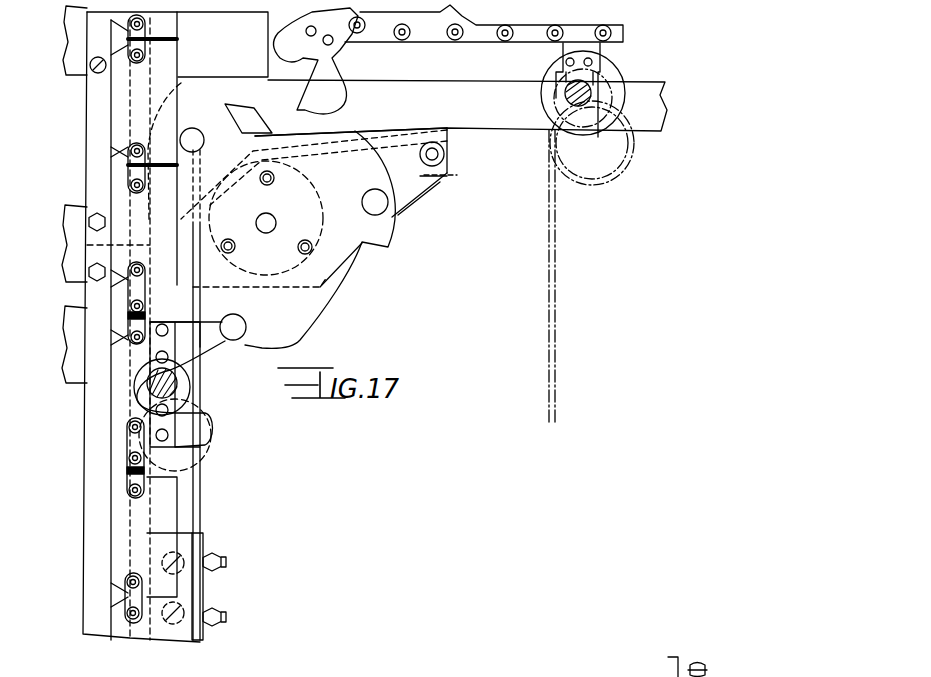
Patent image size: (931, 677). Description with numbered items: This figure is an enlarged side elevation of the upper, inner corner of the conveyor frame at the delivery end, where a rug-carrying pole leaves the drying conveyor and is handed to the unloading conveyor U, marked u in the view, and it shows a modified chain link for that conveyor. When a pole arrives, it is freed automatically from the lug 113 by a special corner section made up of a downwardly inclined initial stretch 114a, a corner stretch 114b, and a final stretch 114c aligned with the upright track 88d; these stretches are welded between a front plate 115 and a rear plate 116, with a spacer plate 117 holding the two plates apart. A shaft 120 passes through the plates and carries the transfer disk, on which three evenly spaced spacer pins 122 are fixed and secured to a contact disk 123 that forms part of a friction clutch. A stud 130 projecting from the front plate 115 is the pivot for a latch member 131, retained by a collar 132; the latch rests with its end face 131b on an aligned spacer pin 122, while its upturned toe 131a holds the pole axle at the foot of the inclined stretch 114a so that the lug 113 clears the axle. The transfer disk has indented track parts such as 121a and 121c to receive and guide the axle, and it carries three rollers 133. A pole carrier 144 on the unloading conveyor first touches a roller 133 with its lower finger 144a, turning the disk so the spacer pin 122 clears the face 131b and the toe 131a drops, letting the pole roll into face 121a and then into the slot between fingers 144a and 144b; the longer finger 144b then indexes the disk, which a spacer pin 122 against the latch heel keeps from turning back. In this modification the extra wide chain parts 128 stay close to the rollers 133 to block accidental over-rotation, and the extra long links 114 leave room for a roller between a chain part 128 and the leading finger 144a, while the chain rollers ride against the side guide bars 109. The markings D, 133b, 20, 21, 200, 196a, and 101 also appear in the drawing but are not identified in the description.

The lug 113 is at (340, 60).
The direction D is at (519, 48).
The extra long links 114 is at (128, 450).
The downwardly inclined initial stretch 114a is at (424, 133).
The corner stretch 114b is at (207, 198).
The final stretch 114c is at (198, 272).
The spacer plate 117 is at (408, 198).
The rear plate 116 is at (455, 176).
The front plate 115 is at (417, 180).
The latch member 131 is at (387, 152).
The collar 132 is at (444, 150).
The stud 130 is at (446, 157).
The indented track part 121a is at (342, 124).
The indented track part 121c is at (151, 289).
The upturned toe 131a is at (248, 115).
The end face 131b is at (257, 126).
The pin 133b is at (192, 128).
The rollers 133 is at (362, 203).
The contact disk 123 is at (318, 200).
The shaft 120 is at (257, 219).
The spacer pins 122 is at (275, 172).
The chain parts 128 is at (178, 53).
The pole carriers 144 is at (128, 425).
The lower finger 144a is at (203, 428).
The longer finger 144b is at (210, 345).
The upright track 88d is at (194, 386).
The unloading conveyor u is at (195, 519).
The side guide bars 109 is at (103, 633).
The axis 20 is at (553, 258).
The circle 21 is at (612, 184).
The element 200 is at (703, 667).
The element 196a is at (737, 670).
The element 101 is at (655, 671).